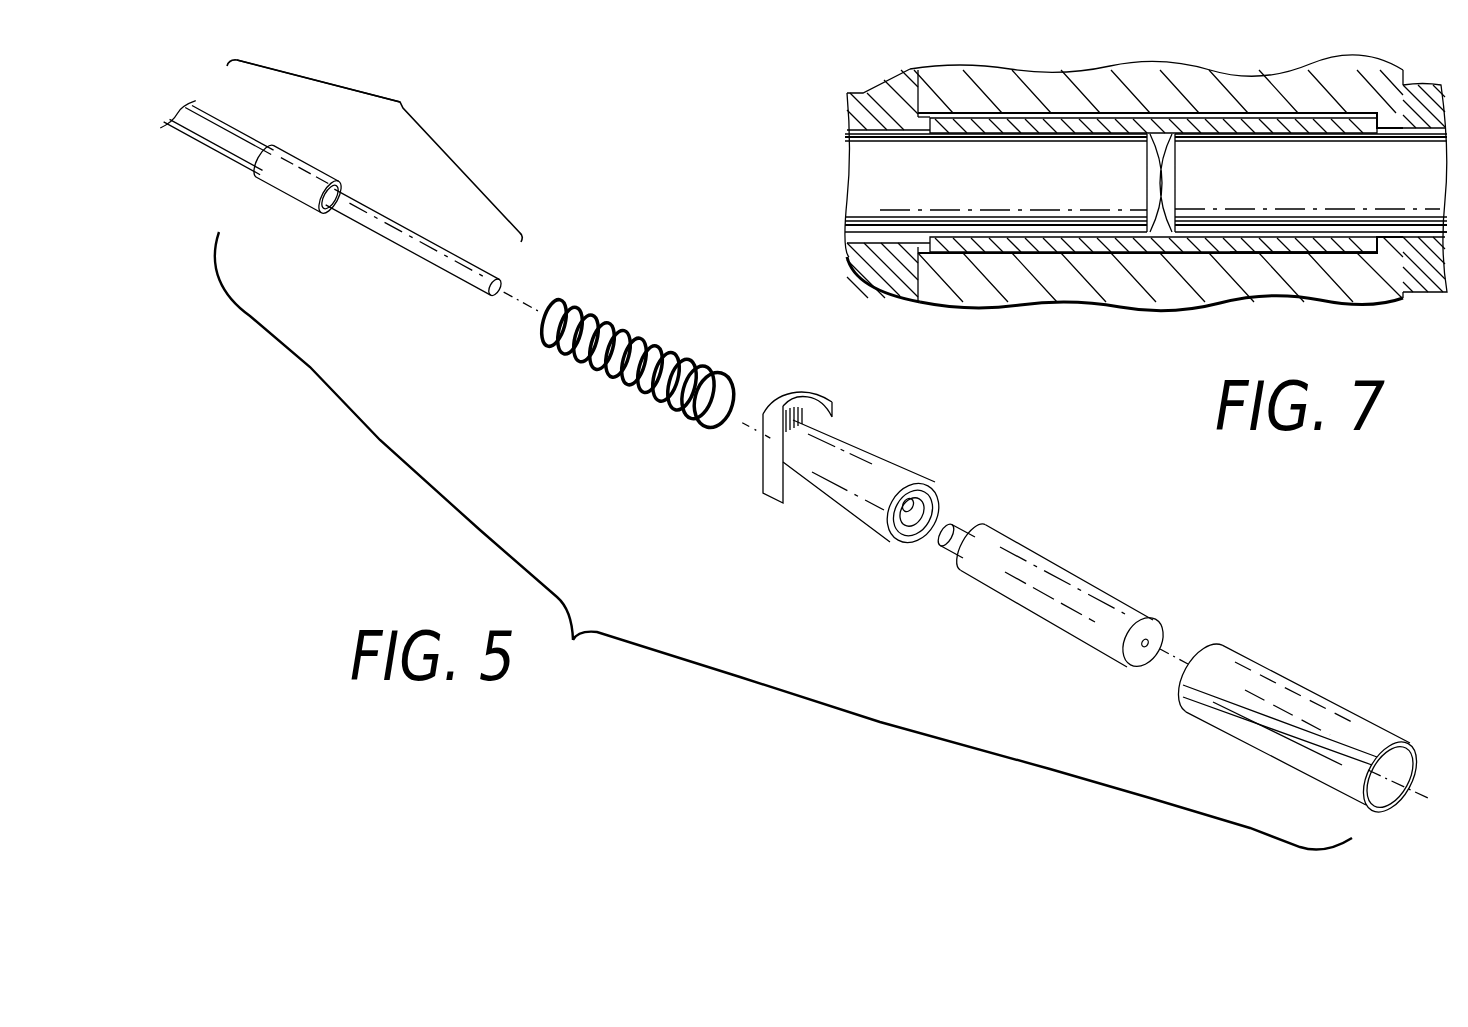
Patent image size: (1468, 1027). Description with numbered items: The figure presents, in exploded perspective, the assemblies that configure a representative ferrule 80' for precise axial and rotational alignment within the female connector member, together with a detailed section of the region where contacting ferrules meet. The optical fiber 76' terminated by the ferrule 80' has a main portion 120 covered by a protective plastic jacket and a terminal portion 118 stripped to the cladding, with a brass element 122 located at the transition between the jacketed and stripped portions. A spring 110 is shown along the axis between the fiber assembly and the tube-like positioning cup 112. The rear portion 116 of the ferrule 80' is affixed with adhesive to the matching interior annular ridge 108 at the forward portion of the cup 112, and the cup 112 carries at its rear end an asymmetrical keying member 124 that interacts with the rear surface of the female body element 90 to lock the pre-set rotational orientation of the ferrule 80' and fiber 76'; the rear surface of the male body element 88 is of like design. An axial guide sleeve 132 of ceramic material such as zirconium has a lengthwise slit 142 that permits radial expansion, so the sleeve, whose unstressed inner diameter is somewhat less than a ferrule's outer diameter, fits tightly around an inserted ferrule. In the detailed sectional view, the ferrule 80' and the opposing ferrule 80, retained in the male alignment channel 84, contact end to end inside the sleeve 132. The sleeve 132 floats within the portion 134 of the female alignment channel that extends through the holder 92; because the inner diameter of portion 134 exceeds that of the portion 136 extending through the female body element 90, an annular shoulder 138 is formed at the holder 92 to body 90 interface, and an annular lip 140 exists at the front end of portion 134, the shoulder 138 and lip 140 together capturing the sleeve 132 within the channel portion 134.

In FIG. 5, the optical fiber 76' is at (338, 81).
In FIG. 5, the main portion 120 is at (218, 153).
In FIG. 5, the brass element 122 is at (297, 207).
In FIG. 5, the terminal portion 118 is at (423, 265).
In FIG. 5, the spring 110 is at (647, 333).
In FIG. 5, the positioning cup 112 is at (798, 526).
In FIG. 5, the keying member 124 is at (830, 412).
In FIG. 5, the interior annular ridge 108 is at (902, 530).
In FIG. 5, the rear portion 116 is at (980, 597).
In FIG. 5, the ferrule 80' is at (1064, 615).
In FIG. 7, the ferrule 80' is at (996, 127).
In FIG. 5, the axial guide sleeve 132 is at (1240, 668).
In FIG. 7, the axial guide sleeve 132 is at (1225, 112).
In FIG. 5, the lengthwise slit 142 is at (1323, 743).
In FIG. 7, the holder 92 is at (1215, 293).
In FIG. 7, the female body element 90 is at (888, 272).
In FIG. 7, the male body element 88 is at (1431, 283).
In FIG. 7, the annular shoulder 138 is at (937, 117).
In FIG. 7, the annular lip 140 is at (1384, 130).
In FIG. 7, the channel portion 136 is at (882, 240).
In FIG. 7, the ferrule 80 is at (1311, 131).
In FIG. 7, the alignment channel 84 is at (1440, 230).
In FIG. 7, the channel portion 134 is at (1240, 250).